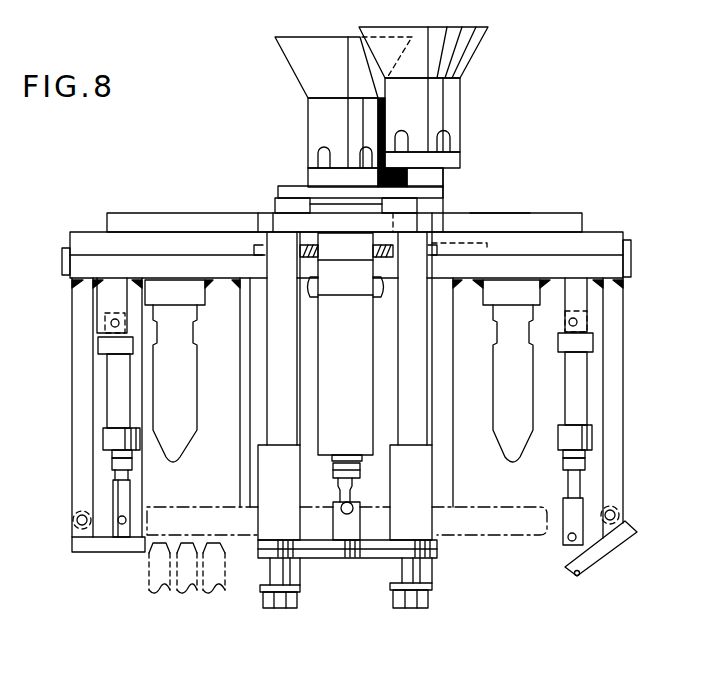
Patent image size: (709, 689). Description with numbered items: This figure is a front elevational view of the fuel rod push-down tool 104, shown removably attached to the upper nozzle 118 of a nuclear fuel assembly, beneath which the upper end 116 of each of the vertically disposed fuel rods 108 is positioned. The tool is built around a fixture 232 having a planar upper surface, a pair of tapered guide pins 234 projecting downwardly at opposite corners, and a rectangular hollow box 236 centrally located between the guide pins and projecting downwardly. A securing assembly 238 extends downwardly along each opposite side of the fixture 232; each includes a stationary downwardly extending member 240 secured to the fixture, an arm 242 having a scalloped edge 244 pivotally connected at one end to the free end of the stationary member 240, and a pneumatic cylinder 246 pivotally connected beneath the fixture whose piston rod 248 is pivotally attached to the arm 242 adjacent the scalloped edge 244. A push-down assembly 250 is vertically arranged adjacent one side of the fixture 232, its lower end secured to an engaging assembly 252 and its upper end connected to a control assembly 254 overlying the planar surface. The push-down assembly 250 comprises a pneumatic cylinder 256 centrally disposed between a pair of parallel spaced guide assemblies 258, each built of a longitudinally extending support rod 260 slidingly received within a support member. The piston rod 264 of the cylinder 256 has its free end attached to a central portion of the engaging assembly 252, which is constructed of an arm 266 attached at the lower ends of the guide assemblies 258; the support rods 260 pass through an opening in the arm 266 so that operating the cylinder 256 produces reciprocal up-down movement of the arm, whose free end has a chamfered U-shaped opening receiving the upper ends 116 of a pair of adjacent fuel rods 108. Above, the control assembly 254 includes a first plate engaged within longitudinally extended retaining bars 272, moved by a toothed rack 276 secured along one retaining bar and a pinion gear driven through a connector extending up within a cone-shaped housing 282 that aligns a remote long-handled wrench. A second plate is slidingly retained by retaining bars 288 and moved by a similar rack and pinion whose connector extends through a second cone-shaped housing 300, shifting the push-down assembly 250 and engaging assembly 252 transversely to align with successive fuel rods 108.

The fuel rod push-down tool 104 is at (494, 212).
The fuel rods 108 is at (150, 578).
The upper end 116 is at (223, 551).
The upper nozzle 118 is at (468, 512).
The fixture 232 is at (167, 292).
The tapered guide pins 234 is at (160, 375).
The rectangular hollow box 236 is at (435, 355).
The securing assembly 238 is at (70, 441).
The stationary member 240 is at (82, 321).
The arm 242 is at (104, 545).
The scalloped edge 244 is at (577, 575).
The pneumatic cylinder 246 is at (118, 393).
The piston rod 248 is at (129, 473).
The push-down assembly 250 is at (336, 375).
The engaging assembly 252 is at (437, 560).
The control assembly 254 is at (447, 186).
The pneumatic cylinder 256 is at (375, 392).
The guide assemblies 258 is at (301, 323).
The support rod 260 is at (290, 575).
The piston rod 264 is at (290, 410).
The arm 266 is at (383, 552).
The retaining bars 272 is at (597, 237).
The toothed rack 276 is at (538, 219).
The cone-shaped housing 282 is at (308, 78).
The retaining bars 288 is at (280, 206).
The cone-shaped housing 300 is at (453, 110).